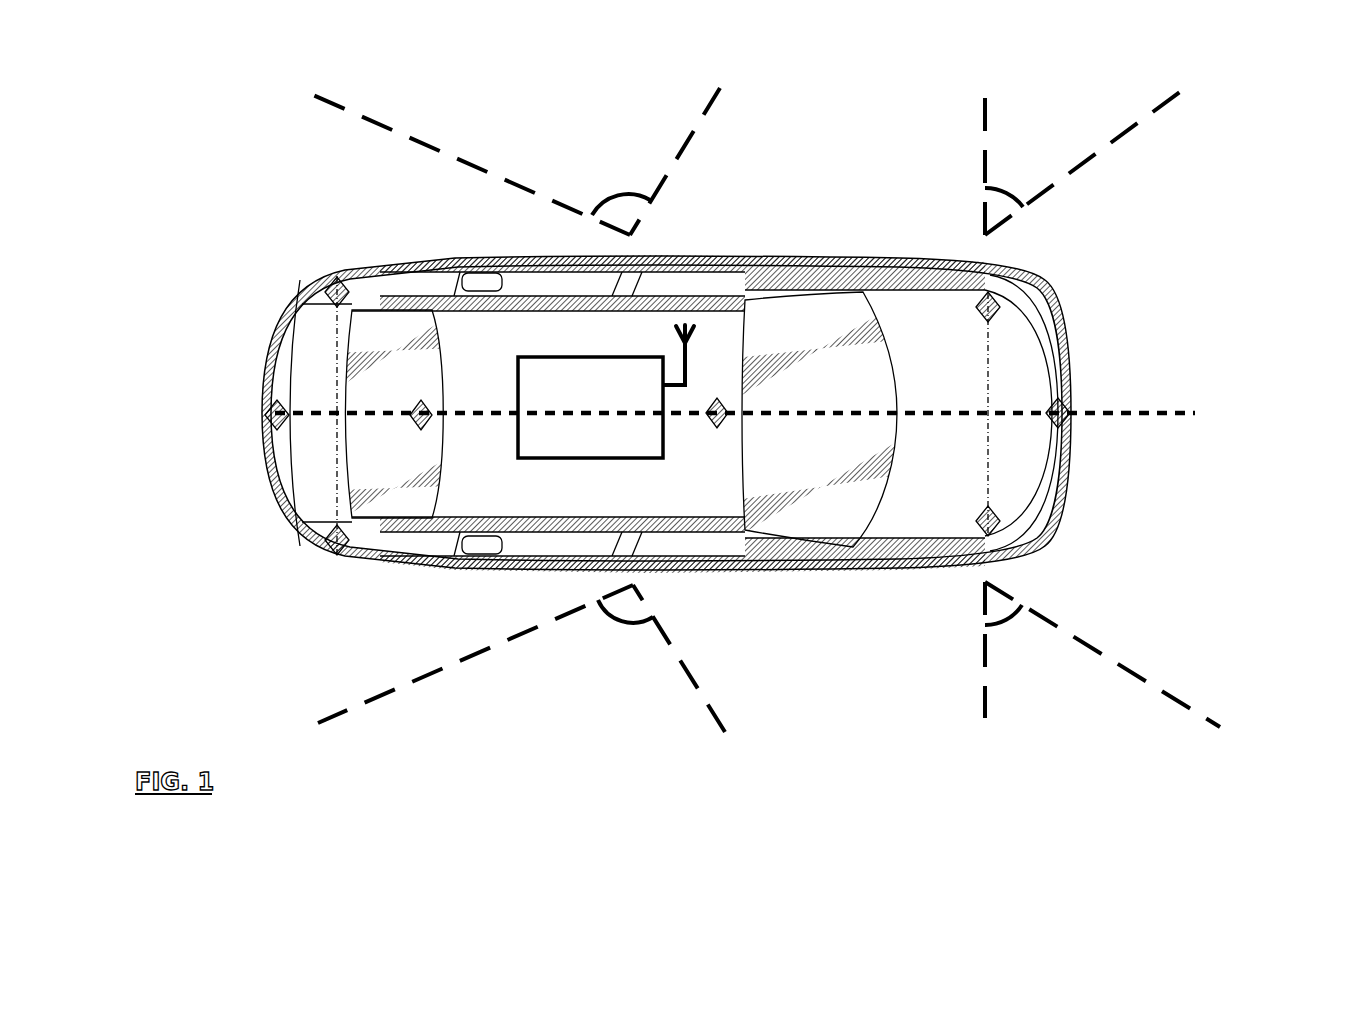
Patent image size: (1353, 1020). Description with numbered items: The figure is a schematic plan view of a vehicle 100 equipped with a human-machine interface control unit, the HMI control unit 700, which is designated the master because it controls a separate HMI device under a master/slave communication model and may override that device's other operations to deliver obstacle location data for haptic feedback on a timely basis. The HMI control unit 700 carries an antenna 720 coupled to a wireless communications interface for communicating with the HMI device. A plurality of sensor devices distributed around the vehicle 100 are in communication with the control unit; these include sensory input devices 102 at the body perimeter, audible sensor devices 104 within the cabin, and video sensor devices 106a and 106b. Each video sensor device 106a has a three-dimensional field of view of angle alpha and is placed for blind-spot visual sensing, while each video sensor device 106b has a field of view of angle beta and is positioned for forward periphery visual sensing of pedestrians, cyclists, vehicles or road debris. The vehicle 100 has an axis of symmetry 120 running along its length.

The vehicle 100 is at (884, 262).
The sensory input device 102 is at (338, 280).
The audible sensor device 104 is at (437, 412).
The video sensor device 106a is at (519, 407).
The video sensor device 106b is at (1102, 402).
The axis of symmetry 120 is at (1122, 413).
The HMI control unit 700 is at (605, 468).
The antenna 720 is at (692, 372).